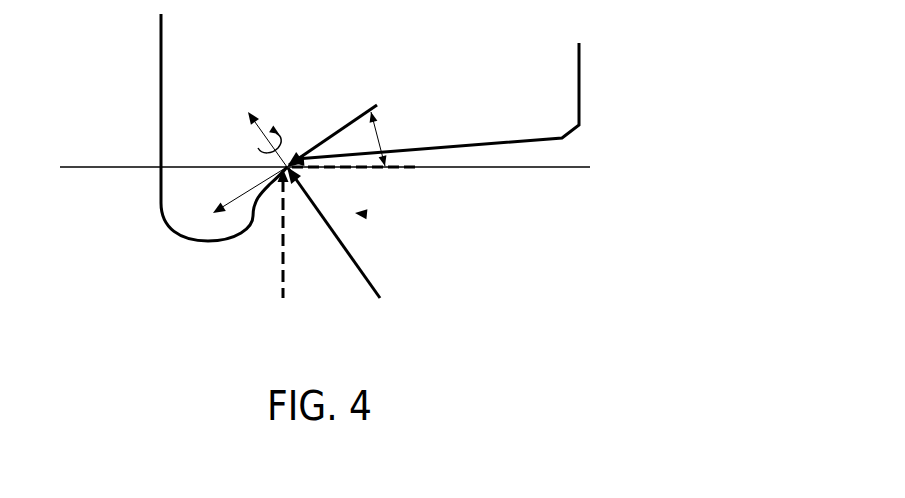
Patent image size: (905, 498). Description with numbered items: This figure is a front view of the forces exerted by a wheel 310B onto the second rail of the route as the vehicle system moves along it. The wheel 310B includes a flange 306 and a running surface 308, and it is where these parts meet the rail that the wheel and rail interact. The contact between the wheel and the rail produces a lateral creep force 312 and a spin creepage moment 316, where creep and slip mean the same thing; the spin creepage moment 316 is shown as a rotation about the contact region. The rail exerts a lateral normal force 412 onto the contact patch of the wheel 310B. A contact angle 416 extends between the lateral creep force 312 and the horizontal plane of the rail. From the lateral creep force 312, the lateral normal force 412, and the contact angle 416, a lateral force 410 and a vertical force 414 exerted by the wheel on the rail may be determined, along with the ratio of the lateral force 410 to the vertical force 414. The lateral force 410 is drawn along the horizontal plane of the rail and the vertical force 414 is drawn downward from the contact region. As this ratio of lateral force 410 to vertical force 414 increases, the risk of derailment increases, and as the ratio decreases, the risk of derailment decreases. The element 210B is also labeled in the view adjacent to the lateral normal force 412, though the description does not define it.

The wheel 310B is at (146, 59).
The flange 306 is at (255, 225).
The lateral creep force 312 is at (261, 199).
The running surface 308 is at (493, 149).
The lateral force 410 is at (360, 169).
The contact angle 416 is at (383, 125).
The lateral normal force 412 is at (370, 276).
The vertical force 414 is at (285, 273).
The spin creepage moment 316 is at (258, 140).
The panel 210B is at (365, 214).